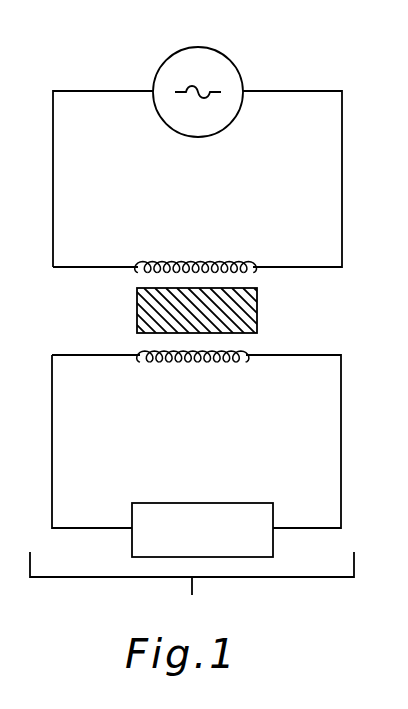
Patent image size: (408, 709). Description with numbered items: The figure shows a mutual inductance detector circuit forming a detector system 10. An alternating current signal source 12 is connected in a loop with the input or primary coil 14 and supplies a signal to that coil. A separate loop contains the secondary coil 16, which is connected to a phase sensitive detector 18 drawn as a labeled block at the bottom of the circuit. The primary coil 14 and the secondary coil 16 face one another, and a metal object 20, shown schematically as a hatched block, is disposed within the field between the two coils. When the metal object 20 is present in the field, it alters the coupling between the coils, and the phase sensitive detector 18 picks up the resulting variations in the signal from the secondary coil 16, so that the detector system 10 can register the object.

The detector system 10 is at (127, 84).
The alternating current signal source 12 is at (185, 53).
The primary coil 14 is at (208, 263).
The secondary coil 16 is at (205, 362).
The phase sensitive detector 18 is at (206, 503).
The metal object 20 is at (137, 308).